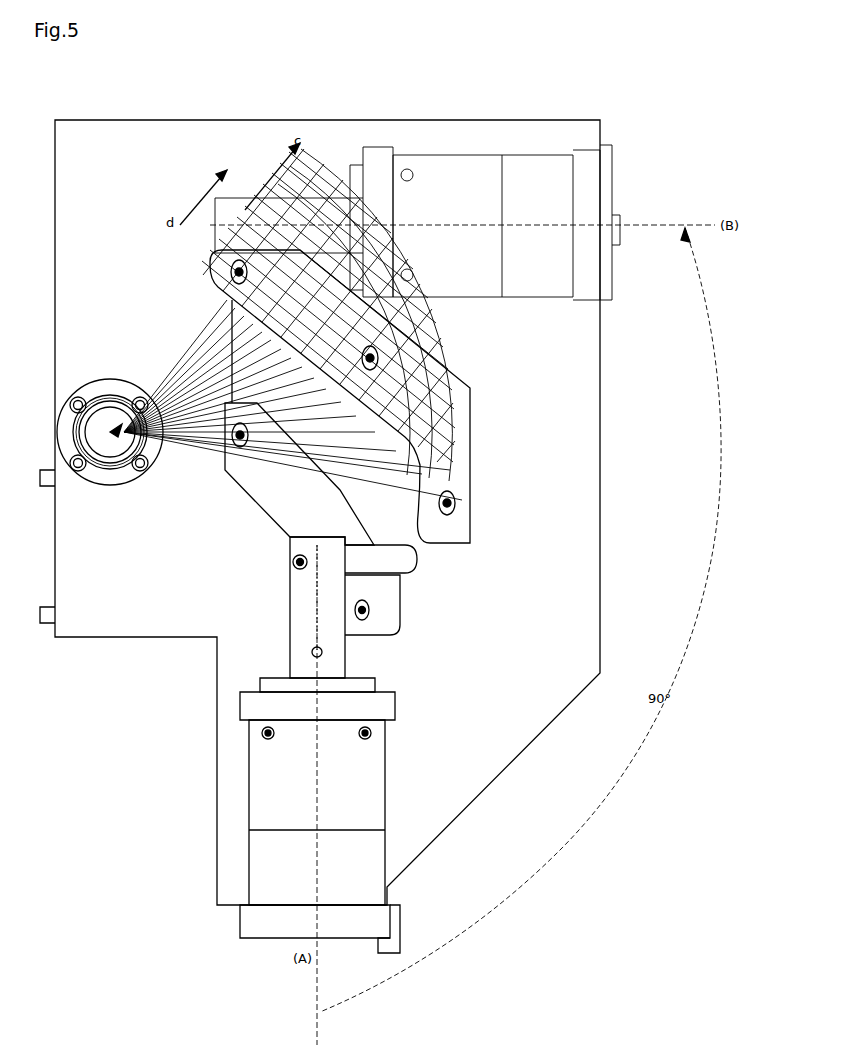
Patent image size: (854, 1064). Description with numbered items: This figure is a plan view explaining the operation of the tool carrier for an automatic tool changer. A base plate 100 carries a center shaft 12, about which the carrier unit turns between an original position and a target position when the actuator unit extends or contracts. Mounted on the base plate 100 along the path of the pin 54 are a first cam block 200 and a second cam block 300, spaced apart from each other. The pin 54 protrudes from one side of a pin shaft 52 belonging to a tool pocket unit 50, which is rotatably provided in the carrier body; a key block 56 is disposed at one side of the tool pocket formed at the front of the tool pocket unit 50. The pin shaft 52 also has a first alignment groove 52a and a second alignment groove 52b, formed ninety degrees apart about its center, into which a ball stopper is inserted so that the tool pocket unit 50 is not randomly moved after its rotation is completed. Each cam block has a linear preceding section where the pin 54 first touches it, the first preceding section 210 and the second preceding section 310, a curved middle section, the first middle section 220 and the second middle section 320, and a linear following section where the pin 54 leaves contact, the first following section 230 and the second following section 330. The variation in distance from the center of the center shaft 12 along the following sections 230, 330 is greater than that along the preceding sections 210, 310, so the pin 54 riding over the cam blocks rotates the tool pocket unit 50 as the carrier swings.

The base plate 100 is at (118, 638).
The center shaft 12 is at (103, 420).
The first following section 230 is at (215, 333).
The first cam block 200 is at (470, 433).
The first middle section 220 is at (420, 378).
The first preceding section 210 is at (400, 470).
The pin 54 is at (222, 284).
The second cam block 300 is at (250, 508).
The second preceding section 310 is at (245, 478).
The second middle section 320 is at (415, 558).
The second following section 330 is at (402, 612).
The pin shaft 52 is at (290, 593).
The first alignment groove 52a is at (312, 645).
The second alignment groove 52b is at (311, 653).
The tool pocket unit 50 is at (257, 795).
The key block 56 is at (402, 925).